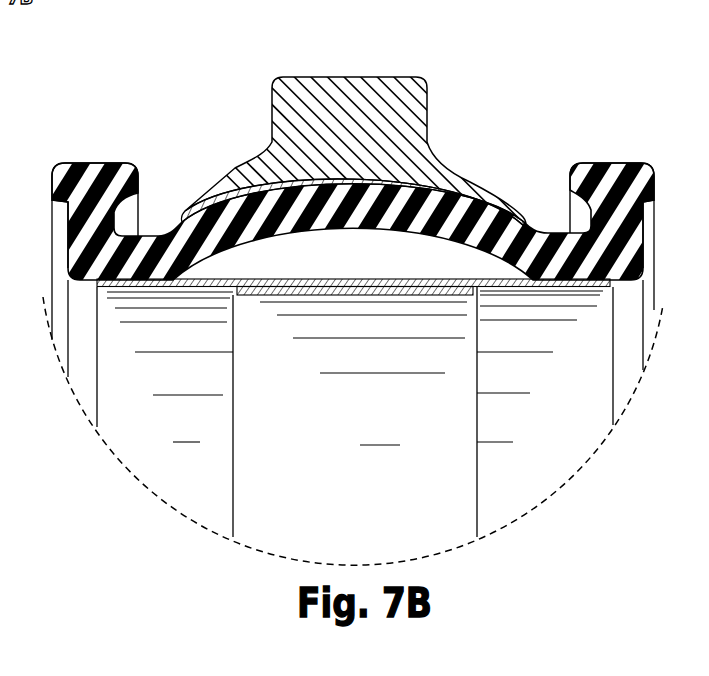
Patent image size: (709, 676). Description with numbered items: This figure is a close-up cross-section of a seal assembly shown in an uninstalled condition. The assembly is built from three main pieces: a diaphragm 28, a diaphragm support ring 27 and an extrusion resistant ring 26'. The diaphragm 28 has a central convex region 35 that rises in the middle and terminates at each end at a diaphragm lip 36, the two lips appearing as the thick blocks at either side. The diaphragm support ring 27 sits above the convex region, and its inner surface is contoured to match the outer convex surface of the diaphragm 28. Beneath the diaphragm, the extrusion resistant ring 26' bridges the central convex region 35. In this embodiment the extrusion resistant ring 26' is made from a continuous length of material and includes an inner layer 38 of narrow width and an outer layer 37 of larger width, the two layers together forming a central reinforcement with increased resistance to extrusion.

The extrusion resistant ring 26' is at (360, 431).
The diaphragm support ring 27 is at (405, 136).
The diaphragm 28 is at (525, 247).
The central convex region 35 is at (290, 196).
The diaphragm lip 36 is at (90, 170).
The outer layer 37 is at (553, 436).
The inner layer 38 is at (373, 506).